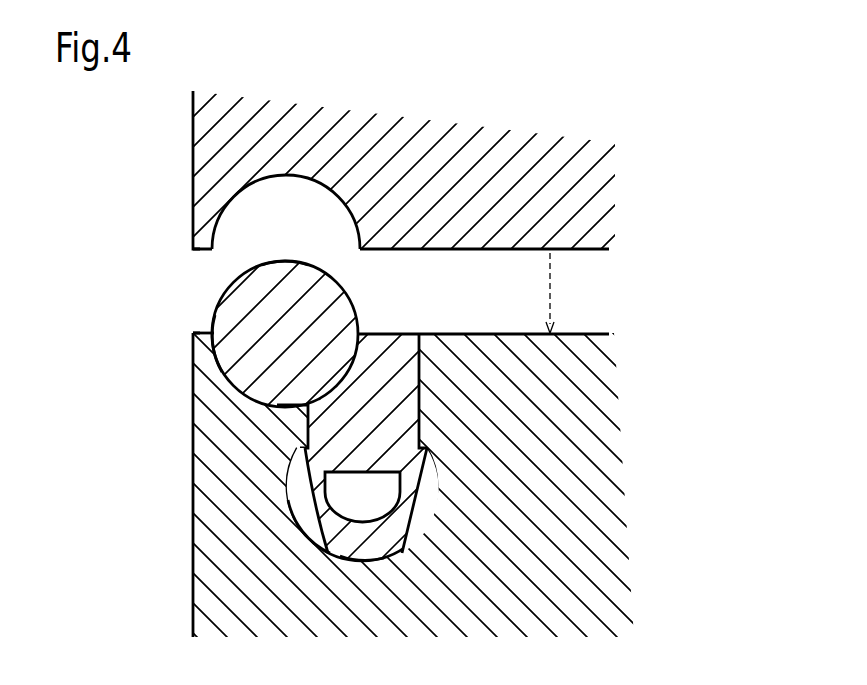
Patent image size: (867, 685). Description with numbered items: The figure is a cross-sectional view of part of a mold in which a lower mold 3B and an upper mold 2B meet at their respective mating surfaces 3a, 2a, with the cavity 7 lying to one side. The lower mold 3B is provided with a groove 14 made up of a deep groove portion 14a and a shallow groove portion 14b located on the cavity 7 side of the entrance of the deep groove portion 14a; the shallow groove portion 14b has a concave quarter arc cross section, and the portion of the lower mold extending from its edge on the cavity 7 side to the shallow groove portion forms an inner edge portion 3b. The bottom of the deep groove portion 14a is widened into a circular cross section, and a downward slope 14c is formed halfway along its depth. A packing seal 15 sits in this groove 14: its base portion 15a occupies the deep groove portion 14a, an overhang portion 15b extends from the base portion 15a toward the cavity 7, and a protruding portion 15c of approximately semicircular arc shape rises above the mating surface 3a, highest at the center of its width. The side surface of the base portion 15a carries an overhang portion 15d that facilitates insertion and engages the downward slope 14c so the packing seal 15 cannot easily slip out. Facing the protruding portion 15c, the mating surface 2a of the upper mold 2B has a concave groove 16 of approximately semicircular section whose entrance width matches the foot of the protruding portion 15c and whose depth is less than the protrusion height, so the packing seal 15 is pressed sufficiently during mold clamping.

The upper mold 2B is at (607, 197).
The mating surface 2a is at (592, 253).
The lower mold 3B is at (600, 420).
The mating surface 3a is at (597, 335).
The inner edge portion 3b is at (213, 332).
The cavity 7 is at (96, 283).
The groove 14 is at (444, 544).
The deep groove portion 14a is at (296, 528).
The shallow groove portion 14b is at (257, 403).
The downward slope 14c is at (422, 445).
The packing seal 15 is at (369, 291).
The base portion 15a is at (377, 559).
The overhang portion 15b is at (221, 367).
The protruding portion 15c is at (284, 259).
The overhang portion 15d is at (296, 472).
The concave groove 16 is at (316, 181).